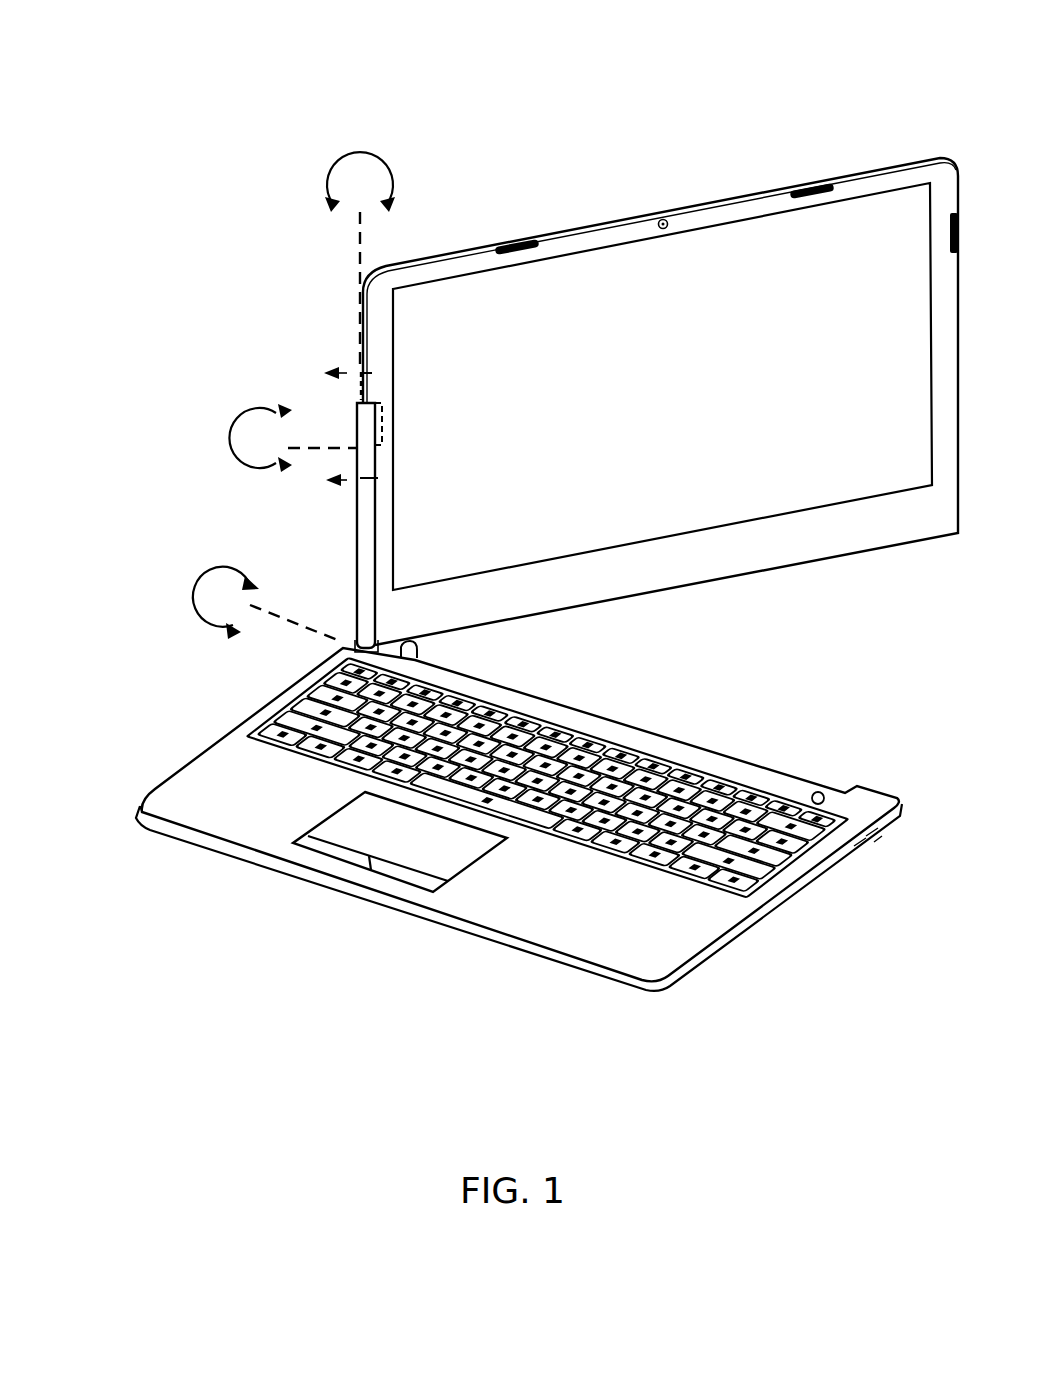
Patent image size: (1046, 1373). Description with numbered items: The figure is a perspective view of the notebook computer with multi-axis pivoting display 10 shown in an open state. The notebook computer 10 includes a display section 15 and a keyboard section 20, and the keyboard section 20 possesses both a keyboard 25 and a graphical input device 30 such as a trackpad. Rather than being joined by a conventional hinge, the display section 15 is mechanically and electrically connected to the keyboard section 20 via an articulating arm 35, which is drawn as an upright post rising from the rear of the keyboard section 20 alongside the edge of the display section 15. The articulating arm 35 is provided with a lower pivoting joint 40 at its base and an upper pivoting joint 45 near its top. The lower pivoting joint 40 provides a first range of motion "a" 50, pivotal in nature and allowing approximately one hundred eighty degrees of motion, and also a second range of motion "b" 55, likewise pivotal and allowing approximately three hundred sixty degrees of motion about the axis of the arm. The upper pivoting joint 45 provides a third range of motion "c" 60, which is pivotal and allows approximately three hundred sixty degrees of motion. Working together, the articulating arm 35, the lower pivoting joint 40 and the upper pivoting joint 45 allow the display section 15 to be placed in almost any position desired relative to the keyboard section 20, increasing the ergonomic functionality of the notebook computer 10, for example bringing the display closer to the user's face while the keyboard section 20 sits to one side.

The notebook computer with multi-axis pivoting display 10 is at (100, 132).
The display section 15 is at (776, 412).
The keyboard section 20 is at (645, 942).
The keyboard 25 is at (720, 778).
The graphical input device 30 is at (365, 846).
The articulating arm 35 is at (355, 537).
The lower pivoting joint 40 is at (348, 648).
The upper pivoting joint 45 is at (357, 405).
The first range of motion "a" 50 is at (190, 588).
The second range of motion "b" 55 is at (378, 158).
The third range of motion "c" 60 is at (236, 411).